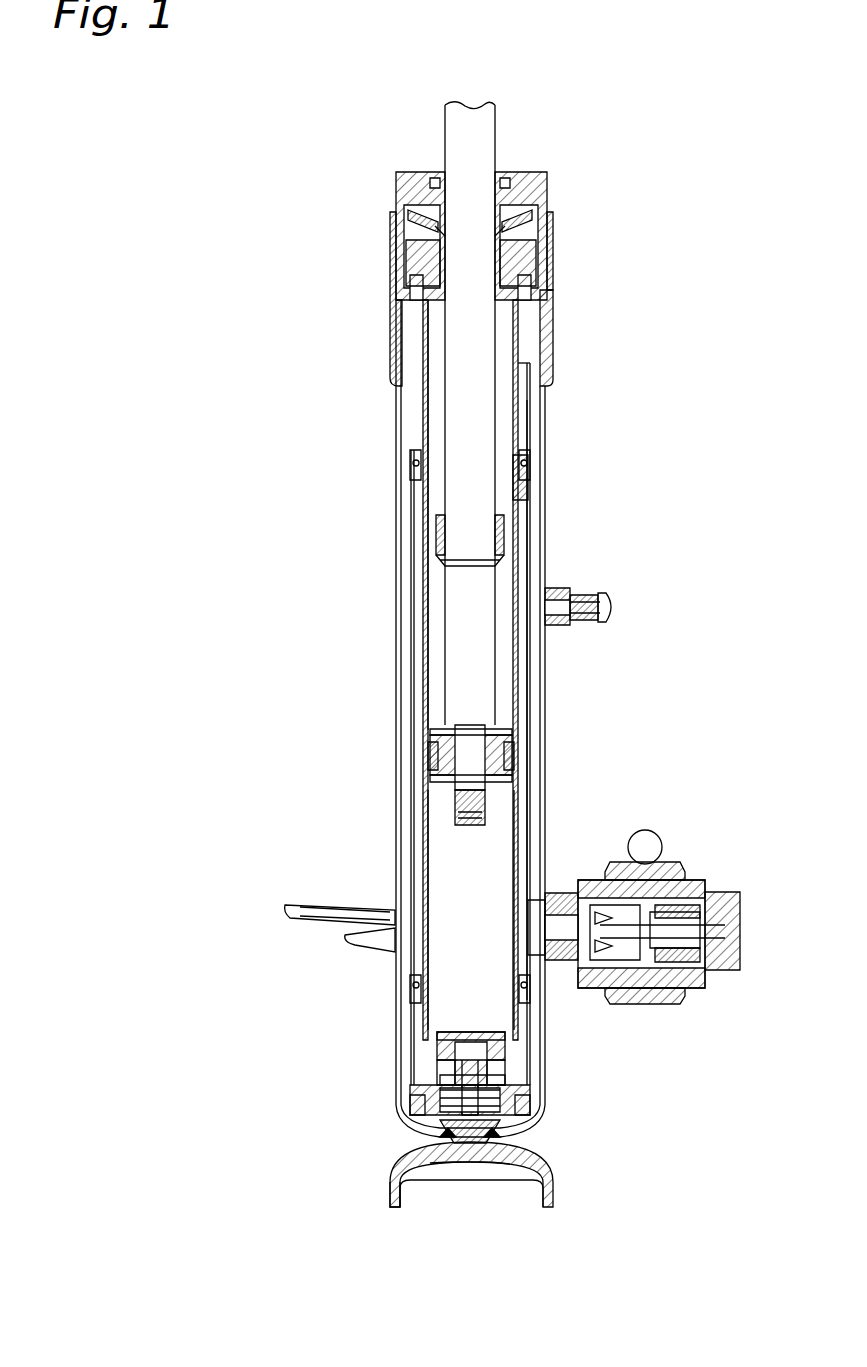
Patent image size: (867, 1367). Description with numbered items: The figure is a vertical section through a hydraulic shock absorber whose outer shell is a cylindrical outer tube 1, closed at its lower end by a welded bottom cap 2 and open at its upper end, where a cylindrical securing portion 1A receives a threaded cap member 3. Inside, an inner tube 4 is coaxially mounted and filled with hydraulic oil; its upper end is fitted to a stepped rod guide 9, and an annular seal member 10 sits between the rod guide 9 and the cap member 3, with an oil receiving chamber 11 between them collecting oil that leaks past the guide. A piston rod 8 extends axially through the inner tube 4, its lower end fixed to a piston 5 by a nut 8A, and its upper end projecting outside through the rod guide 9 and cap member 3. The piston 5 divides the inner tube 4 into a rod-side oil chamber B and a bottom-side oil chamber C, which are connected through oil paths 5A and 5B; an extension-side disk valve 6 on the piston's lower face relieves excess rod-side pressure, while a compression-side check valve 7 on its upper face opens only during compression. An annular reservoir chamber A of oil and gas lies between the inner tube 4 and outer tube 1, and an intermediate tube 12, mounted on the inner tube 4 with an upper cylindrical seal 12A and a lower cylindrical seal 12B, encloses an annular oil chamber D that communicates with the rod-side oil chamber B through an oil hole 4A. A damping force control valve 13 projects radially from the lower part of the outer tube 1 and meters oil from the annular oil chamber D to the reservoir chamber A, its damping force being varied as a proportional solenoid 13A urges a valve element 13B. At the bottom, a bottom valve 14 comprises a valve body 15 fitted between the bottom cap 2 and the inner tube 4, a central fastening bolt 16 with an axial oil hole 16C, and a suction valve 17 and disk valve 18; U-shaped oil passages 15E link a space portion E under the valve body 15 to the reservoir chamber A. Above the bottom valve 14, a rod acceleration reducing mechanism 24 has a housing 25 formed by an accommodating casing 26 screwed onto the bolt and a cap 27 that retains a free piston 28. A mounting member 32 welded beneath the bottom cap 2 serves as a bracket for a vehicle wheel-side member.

The outer tube 1 is at (398, 548).
The cylindrical securing portion 1A is at (553, 326).
The bottom cap 2 is at (492, 1152).
The cap member 3 is at (532, 190).
The inner tube 4 is at (522, 406).
The oil hole 4A is at (522, 500).
The piston 5 is at (508, 744).
The oil paths 5A is at (515, 764).
The oil paths 5B is at (440, 763).
The extension-side disk valve 6 is at (514, 784).
The compression-side check valve 7 is at (437, 733).
The piston rod 8 is at (458, 160).
The nut 8A is at (447, 808).
The rod guide 9 is at (520, 266).
The seal member 10 is at (420, 216).
The oil receiving chamber 11 is at (393, 258).
The intermediate tube 12 is at (413, 646).
The upper cylindrical seal 12A is at (412, 462).
The lower cylindrical seal 12B is at (414, 988).
The damping force control valve 13 is at (706, 988).
The proportional solenoid 13A is at (660, 882).
The valve element 13B is at (630, 994).
The bottom valve 14 is at (400, 1110).
The valve body 15 is at (415, 1096).
The oil passages 15E is at (415, 1112).
The fastening bolt 16 is at (536, 1141).
The oil hole 16C is at (474, 1152).
The suction valve 17 is at (510, 1086).
The disk valve 18 is at (445, 1128).
The rod acceleration reducing mechanism 24 is at (438, 1040).
The housing 25 is at (505, 1072).
The accommodating casing 26 is at (440, 1072).
The cap 27 is at (506, 1032).
The free piston 28 is at (520, 1052).
The mounting member 32 is at (392, 1190).
The reservoir chamber A is at (536, 576).
The rod-side oil chamber B is at (438, 376).
The bottom-side oil chamber C is at (456, 918).
The annular oil chamber D is at (520, 677).
The bottom-side space portion E is at (458, 1152).